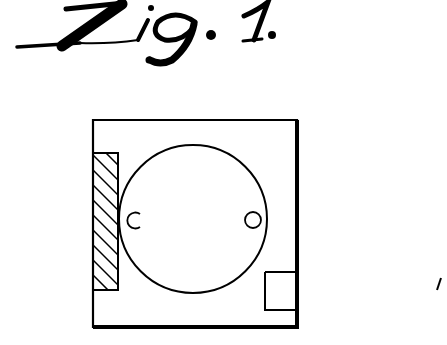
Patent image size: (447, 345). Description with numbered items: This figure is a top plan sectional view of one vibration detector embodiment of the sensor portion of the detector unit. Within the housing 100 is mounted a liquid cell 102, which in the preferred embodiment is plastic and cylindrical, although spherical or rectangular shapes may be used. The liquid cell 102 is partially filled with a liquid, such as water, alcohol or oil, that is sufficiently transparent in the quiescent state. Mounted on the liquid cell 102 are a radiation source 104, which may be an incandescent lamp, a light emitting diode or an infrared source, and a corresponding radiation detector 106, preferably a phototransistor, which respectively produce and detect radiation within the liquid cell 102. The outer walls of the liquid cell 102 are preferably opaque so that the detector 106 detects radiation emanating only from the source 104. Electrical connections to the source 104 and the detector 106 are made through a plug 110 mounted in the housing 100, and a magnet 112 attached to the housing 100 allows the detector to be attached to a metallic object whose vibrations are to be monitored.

The housing 100 is at (298, 251).
The liquid cell 102 is at (243, 170).
The radiation source 104 is at (245, 216).
The radiation detector 106 is at (141, 222).
The plug 110 is at (287, 296).
The magnet 112 is at (110, 275).